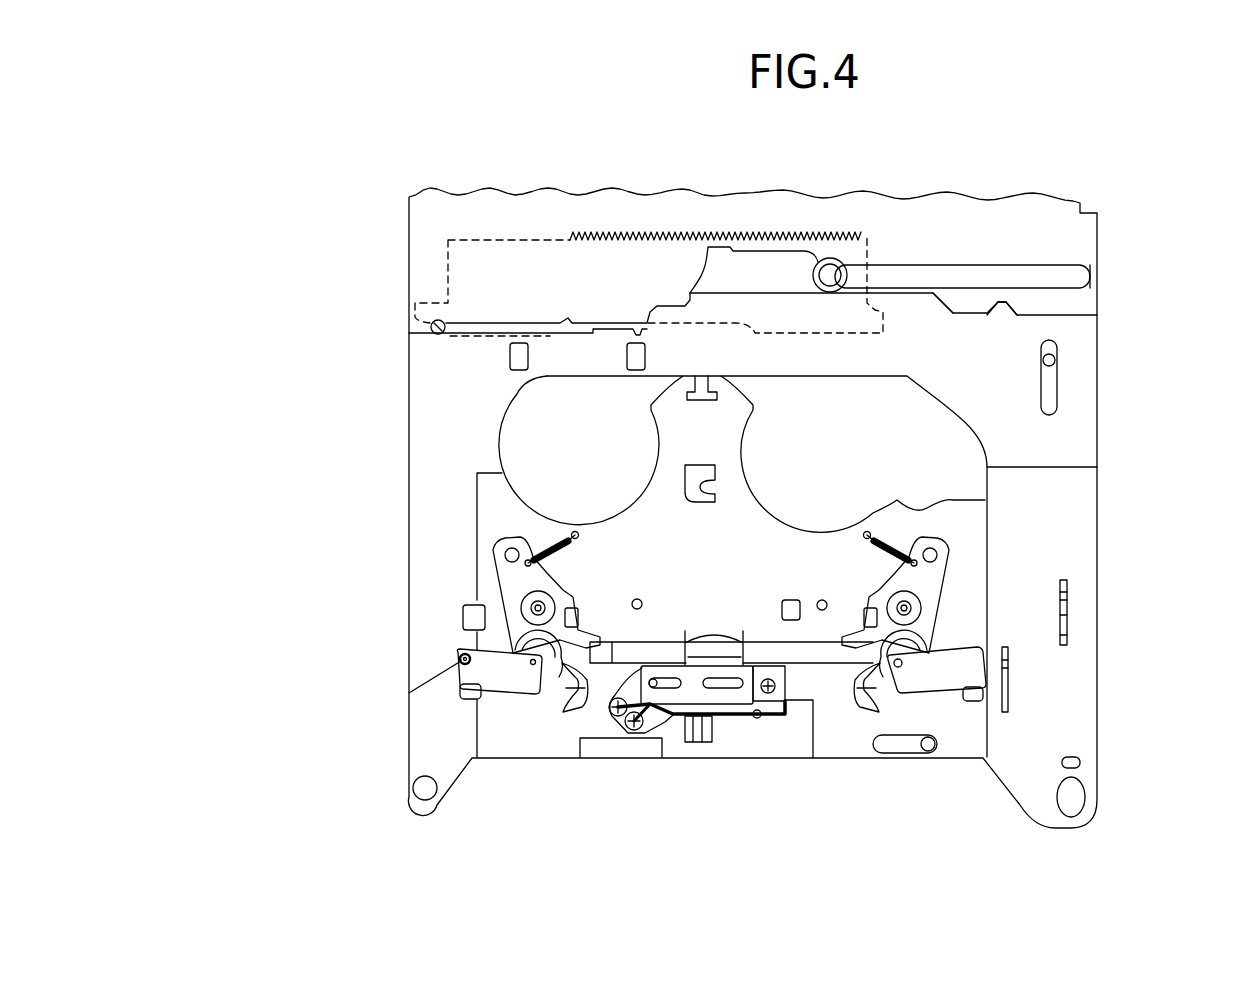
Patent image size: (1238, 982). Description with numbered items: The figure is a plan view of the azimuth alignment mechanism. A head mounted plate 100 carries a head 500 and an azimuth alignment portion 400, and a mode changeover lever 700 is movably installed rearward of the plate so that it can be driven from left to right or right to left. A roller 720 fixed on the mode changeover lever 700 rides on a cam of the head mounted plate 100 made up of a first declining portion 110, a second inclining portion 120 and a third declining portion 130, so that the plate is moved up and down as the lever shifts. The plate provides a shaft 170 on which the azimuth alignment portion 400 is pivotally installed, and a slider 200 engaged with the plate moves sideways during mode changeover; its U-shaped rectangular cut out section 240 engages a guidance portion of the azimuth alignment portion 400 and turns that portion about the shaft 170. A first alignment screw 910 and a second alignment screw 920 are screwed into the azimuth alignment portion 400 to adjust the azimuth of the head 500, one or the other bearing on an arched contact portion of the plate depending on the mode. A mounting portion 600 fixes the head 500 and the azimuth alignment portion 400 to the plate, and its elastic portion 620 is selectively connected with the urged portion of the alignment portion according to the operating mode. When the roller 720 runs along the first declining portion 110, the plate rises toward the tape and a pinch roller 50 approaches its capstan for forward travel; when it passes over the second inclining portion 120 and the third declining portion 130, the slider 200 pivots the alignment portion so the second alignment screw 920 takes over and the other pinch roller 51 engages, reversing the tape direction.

The head mounted plate 100 is at (1087, 508).
The first declining portion 110 is at (945, 317).
The second inclining portion 120 is at (998, 318).
The third declining portion 130 is at (1017, 308).
The shaft 170 is at (653, 679).
The slider 200 is at (797, 747).
The rectangular cut out section 240 is at (697, 742).
The azimuth alignment portion 400 is at (650, 730).
The head 500 is at (713, 632).
The mounting portion 600 is at (721, 703).
The elastic portion 620 is at (738, 703).
The mode changeover lever 700 is at (440, 264).
The roller 720 is at (840, 266).
The first alignment screw 910 is at (609, 709).
The second alignment screw 920 is at (630, 726).
The pinch roller 50 is at (522, 645).
The pinch roller 51 is at (965, 648).